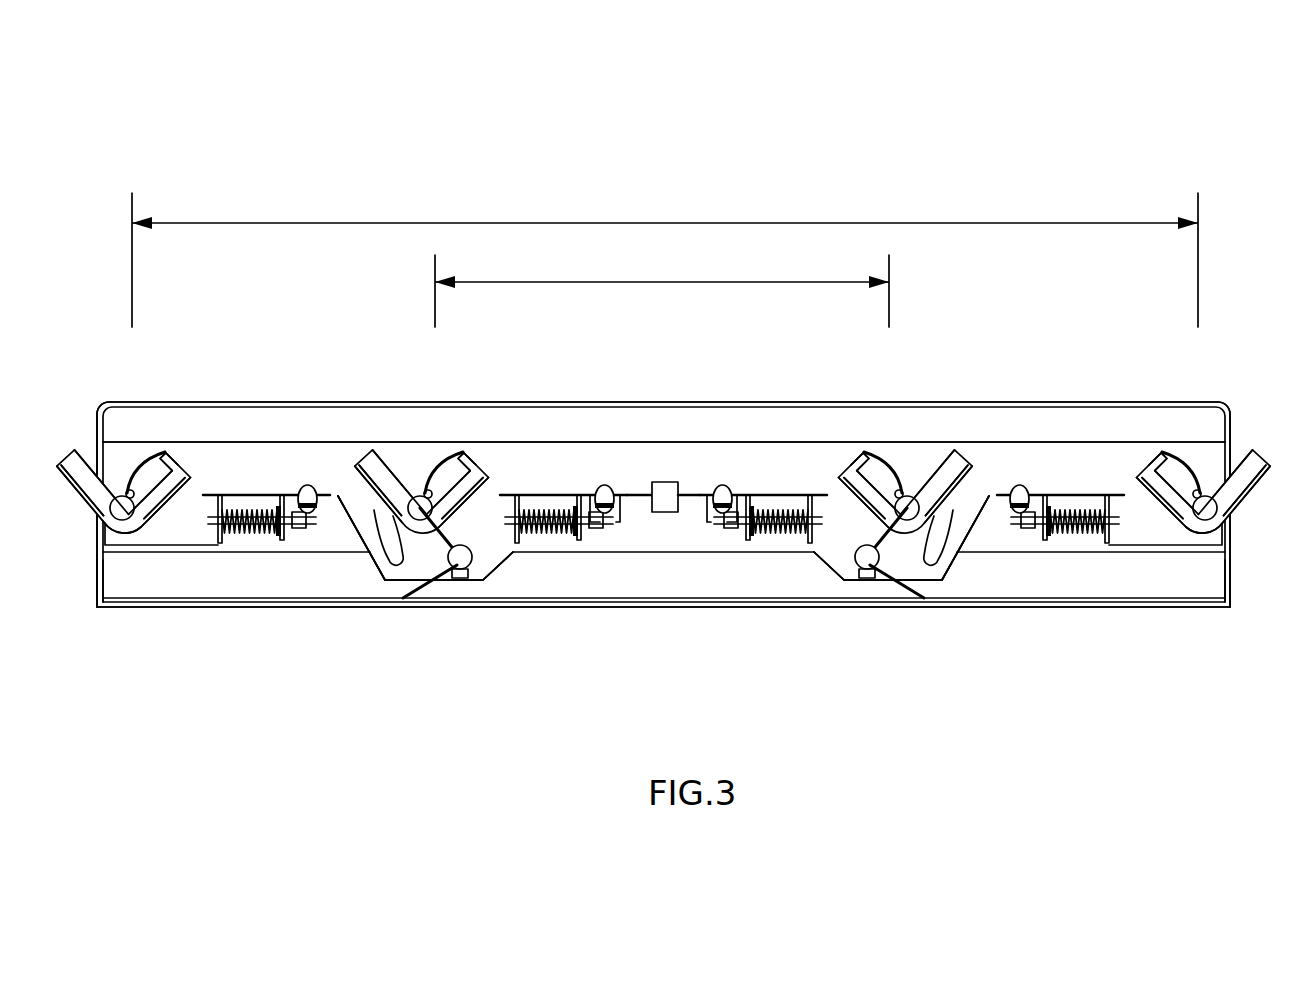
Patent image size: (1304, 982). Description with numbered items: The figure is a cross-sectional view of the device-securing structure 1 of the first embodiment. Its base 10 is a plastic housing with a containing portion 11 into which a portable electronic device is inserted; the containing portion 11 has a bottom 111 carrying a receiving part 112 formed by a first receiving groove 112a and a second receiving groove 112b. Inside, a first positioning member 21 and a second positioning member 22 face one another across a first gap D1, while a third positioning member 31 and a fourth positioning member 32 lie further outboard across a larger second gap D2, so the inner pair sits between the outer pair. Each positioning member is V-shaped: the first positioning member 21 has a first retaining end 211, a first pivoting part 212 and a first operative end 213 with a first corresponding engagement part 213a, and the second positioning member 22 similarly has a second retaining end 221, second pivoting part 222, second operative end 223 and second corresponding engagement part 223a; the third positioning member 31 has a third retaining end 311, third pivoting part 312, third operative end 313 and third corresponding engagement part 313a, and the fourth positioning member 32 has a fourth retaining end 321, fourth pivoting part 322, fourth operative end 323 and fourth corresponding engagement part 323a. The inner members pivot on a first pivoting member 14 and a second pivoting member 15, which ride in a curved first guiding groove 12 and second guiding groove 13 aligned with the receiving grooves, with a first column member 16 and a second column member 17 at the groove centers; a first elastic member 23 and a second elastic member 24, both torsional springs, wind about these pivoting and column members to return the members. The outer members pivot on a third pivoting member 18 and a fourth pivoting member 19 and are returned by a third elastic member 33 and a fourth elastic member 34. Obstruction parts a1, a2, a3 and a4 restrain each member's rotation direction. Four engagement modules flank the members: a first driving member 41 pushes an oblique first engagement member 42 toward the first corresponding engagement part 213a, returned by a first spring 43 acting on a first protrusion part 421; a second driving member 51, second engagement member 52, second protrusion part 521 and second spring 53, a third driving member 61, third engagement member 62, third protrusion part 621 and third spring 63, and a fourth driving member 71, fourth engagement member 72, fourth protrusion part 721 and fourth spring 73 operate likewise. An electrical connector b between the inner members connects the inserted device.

The device-securing structure 1 is at (1226, 109).
The base 10 is at (1115, 608).
The containing portion 11 is at (262, 400).
The bottom 111 is at (746, 441).
The receiving part 112 is at (358, 678).
The first receiving groove 112a is at (395, 583).
The second receiving groove 112b is at (935, 583).
The first guiding groove 12 is at (393, 548).
The second guiding groove 13 is at (932, 550).
The first pivoting member 14 is at (423, 494).
The second pivoting member 15 is at (903, 494).
The first column member 16 is at (460, 580).
The second column member 17 is at (866, 580).
The third pivoting member 18 is at (112, 575).
The fourth pivoting member 19 is at (1198, 575).
The first positioning member 21 is at (508, 474).
The first retaining end 211 is at (362, 460).
The first pivoting part 212 is at (452, 536).
The first operative end 213 is at (467, 453).
The first corresponding engagement part 213a is at (490, 472).
The second positioning member 22 is at (819, 474).
The second retaining end 221 is at (965, 460).
The second pivoting part 222 is at (875, 536).
The second operative end 223 is at (860, 453).
The second corresponding engagement part 223a is at (837, 472).
The first elastic member 23 is at (412, 596).
The second elastic member 24 is at (912, 596).
The third positioning member 31 is at (88, 497).
The third retaining end 311 is at (64, 455).
The third pivoting part 312 is at (130, 523).
The third operative end 313 is at (165, 453).
The third corresponding engagement part 313a is at (182, 467).
The fourth positioning member 32 is at (1239, 497).
The fourth retaining end 321 is at (1263, 455).
The fourth pivoting part 322 is at (1197, 525).
The fourth operative end 323 is at (1162, 453).
The fourth corresponding engagement part 323a is at (1145, 467).
The third elastic member 33 is at (123, 486).
The fourth elastic member 34 is at (1204, 486).
The first driving member 41 is at (606, 484).
The first engagement member 42 is at (600, 540).
The first protrusion part 421 is at (568, 542).
The first spring 43 is at (553, 545).
The second driving member 51 is at (720, 484).
The second engagement member 52 is at (727, 540).
The second protrusion part 521 is at (758, 542).
The second spring 53 is at (773, 545).
The third driving member 61 is at (305, 484).
The third engagement member 62 is at (300, 540).
The third protrusion part 621 is at (270, 543).
The third spring 63 is at (245, 545).
The fourth driving member 71 is at (1019, 484).
The fourth engagement member 72 is at (1025, 545).
The fourth protrusion part 721 is at (1050, 542).
The fourth spring 73 is at (1075, 545).
The first obstruction part a1 is at (431, 490).
The second obstruction part a2 is at (896, 490).
The third obstruction part a3 is at (131, 490).
The fourth obstruction part a4 is at (1196, 490).
The electrical connector b is at (665, 512).
The first gap D1 is at (662, 291).
The second gap D2 is at (665, 260).